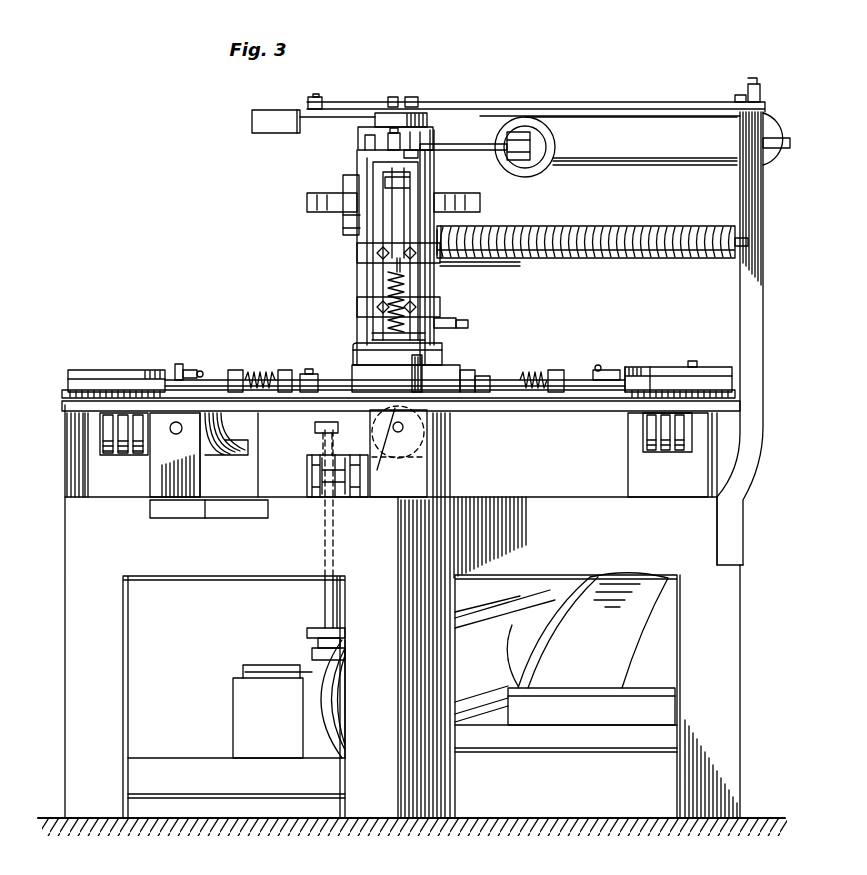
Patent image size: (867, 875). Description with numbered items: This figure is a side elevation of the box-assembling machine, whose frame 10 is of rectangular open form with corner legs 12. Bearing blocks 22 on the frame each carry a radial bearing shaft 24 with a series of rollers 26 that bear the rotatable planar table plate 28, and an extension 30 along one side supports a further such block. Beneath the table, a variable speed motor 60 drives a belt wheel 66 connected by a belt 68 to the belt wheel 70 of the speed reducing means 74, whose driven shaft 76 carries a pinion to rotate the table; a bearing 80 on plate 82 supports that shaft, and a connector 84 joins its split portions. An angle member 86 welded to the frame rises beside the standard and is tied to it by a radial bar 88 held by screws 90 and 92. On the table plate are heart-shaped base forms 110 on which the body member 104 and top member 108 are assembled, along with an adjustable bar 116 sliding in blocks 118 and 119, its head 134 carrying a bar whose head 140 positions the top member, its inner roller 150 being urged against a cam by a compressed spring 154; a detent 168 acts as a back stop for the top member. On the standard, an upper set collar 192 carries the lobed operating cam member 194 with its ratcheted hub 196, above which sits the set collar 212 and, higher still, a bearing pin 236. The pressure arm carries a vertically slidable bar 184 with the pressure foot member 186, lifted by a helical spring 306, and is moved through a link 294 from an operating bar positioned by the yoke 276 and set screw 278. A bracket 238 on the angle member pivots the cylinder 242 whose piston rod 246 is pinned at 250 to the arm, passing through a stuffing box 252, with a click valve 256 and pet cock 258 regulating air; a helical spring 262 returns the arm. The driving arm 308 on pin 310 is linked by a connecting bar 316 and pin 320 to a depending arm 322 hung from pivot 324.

The frame 10 is at (42, 527).
The corner legs 12 is at (78, 703).
The bearing block 22 is at (102, 500).
The bearing shaft 24 is at (176, 435).
The rollers 26 is at (135, 456).
The table plate 28 is at (62, 397).
The extension 30 is at (168, 517).
The variable speed motor 60 is at (604, 593).
The belt wheel 66 is at (512, 628).
The belt 68 is at (485, 698).
The belt wheel 70 is at (340, 676).
The speed reducing means 74 is at (258, 712).
The driven shaft 76 is at (323, 445).
The bearing 80 is at (325, 483).
The plate 82 is at (310, 464).
The connector 84 is at (307, 632).
The angle member 86 is at (752, 312).
The bar 88 is at (574, 101).
The screw 90 is at (411, 96).
The screw 92 is at (735, 99).
The body member 104 is at (110, 370).
The top member 108 is at (650, 367).
The base form 110 is at (67, 388).
The adjustable bar 116 is at (222, 378).
The block 118 is at (292, 372).
The block 119 is at (236, 370).
The head 134 is at (541, 372).
The head 140 is at (180, 364).
The roller 150 is at (320, 373).
The compressed spring 154 is at (260, 372).
The detent 168 is at (440, 366).
The vertically slidable bar 184 is at (388, 270).
The pressure foot member 186 is at (430, 356).
The upper set collar 192 is at (345, 222).
The operating cam member 194 is at (322, 204).
The ratcheted hub 196 is at (343, 186).
The set collar 212 is at (433, 157).
The bearing pin 236 is at (390, 96).
The bracket 238 is at (777, 158).
The cylinder 242 is at (577, 166).
The piston rod 246 is at (482, 143).
The pin 250 is at (358, 128).
The stuffing box 252 is at (530, 141).
The click valve 256 is at (757, 85).
The pet cock 258 is at (742, 96).
The helical spring 262 is at (586, 258).
The yoke 276 is at (416, 150).
The set screw 278 is at (402, 132).
The link 294 is at (392, 217).
The helical spring 306 is at (395, 292).
The driving arm 308 is at (442, 343).
The pin 310 is at (455, 226).
The connecting bar 316 is at (448, 318).
The pin 320 is at (468, 324).
The depending arm 322 is at (437, 290).
The pivot 324 is at (462, 262).